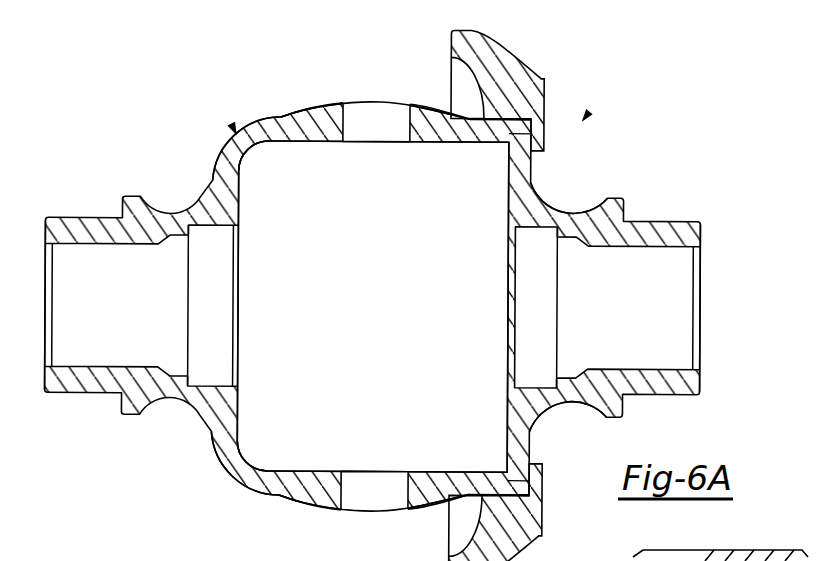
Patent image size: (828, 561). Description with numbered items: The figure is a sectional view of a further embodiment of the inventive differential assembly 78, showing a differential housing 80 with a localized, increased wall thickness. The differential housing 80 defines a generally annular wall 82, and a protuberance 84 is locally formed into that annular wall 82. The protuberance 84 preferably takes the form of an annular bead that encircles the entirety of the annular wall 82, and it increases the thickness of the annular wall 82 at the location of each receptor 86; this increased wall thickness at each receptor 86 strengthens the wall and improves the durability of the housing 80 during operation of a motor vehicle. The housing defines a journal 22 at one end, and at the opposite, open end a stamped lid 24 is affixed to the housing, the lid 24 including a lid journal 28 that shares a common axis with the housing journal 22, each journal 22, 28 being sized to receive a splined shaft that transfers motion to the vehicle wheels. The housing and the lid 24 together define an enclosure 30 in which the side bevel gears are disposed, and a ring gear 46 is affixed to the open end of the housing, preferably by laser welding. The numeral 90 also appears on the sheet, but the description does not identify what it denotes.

The journal 22 is at (82, 217).
The lid 24 is at (534, 184).
The lid journal 28 is at (664, 220).
The enclosure 30 is at (369, 311).
The ring gear 46 is at (500, 56).
The differential assembly 78 is at (584, 116).
The differential housing 80 is at (232, 128).
The annular wall 82 is at (287, 134).
The protuberance 84 is at (327, 484).
The receptor 86 is at (375, 481).
The component (cut off) 90 is at (114, 552).